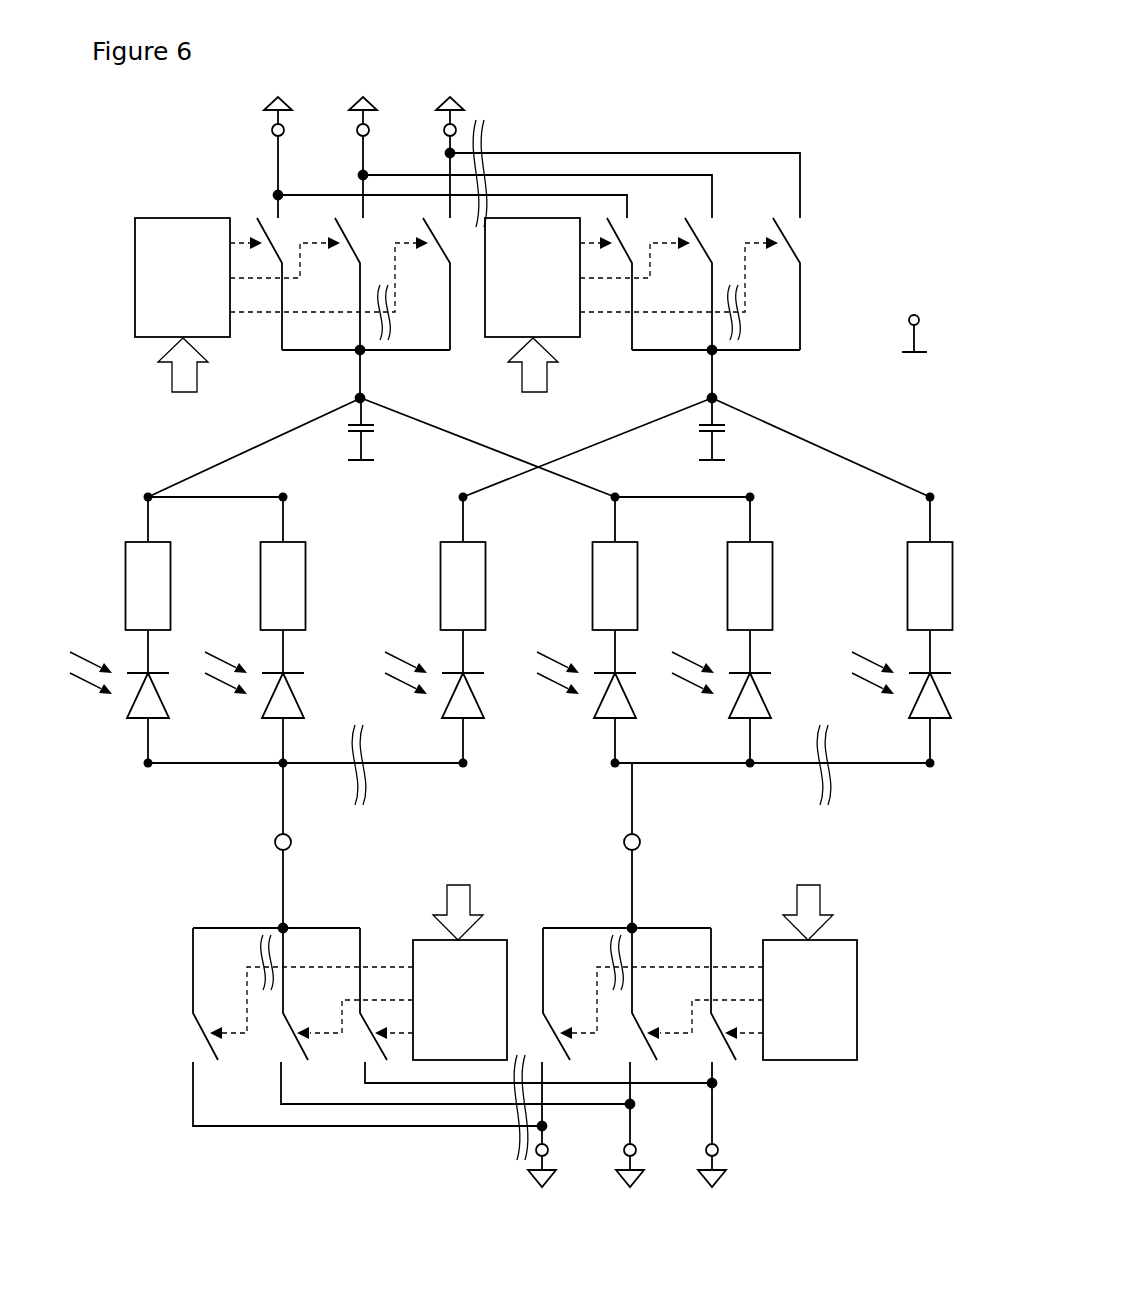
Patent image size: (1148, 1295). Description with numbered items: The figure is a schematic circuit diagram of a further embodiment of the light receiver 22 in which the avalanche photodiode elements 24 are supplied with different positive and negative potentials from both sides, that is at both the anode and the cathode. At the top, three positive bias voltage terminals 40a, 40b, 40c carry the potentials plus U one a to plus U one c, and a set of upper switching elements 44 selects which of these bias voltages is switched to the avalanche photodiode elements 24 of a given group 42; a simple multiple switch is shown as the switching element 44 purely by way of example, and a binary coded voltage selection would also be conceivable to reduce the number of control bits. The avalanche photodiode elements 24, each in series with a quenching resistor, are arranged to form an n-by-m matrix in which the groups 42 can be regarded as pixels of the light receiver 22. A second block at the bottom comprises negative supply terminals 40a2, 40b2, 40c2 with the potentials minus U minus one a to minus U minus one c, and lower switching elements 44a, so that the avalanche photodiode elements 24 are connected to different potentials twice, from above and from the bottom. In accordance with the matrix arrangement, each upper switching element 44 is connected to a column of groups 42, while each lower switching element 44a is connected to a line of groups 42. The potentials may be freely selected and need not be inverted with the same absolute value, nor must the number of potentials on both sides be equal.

The light receiver 22 is at (800, 80).
The avalanche photodiode element 24 is at (325, 582).
The bias voltage terminal 40a is at (272, 131).
The bias voltage terminal 40b is at (358, 131).
The bias voltage terminal 40c is at (447, 131).
The supply terminal 40a2 is at (535, 1157).
The supply terminal 40b2 is at (633, 1153).
The supply terminal 40c2 is at (720, 1150).
The group 42 is at (913, 783).
The switching element 44 is at (803, 390).
The switching element 44a is at (722, 893).